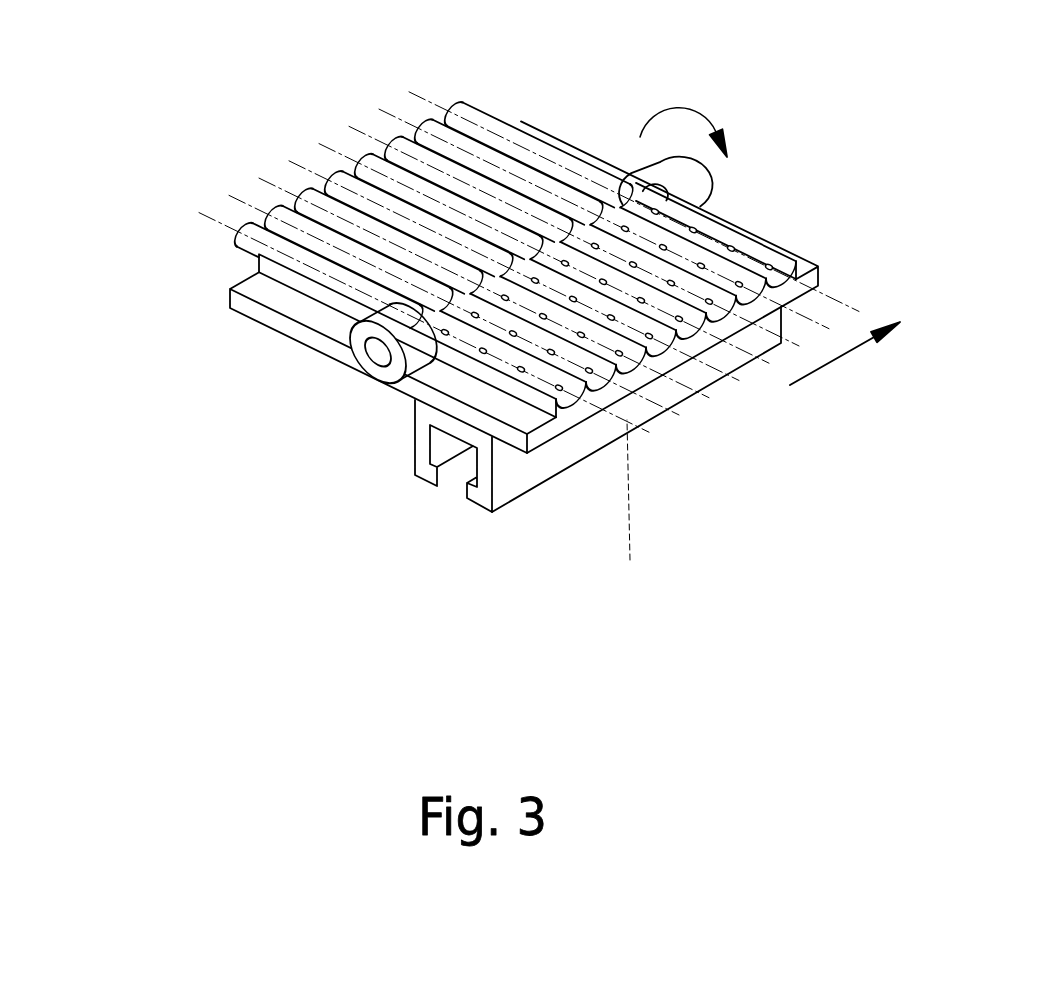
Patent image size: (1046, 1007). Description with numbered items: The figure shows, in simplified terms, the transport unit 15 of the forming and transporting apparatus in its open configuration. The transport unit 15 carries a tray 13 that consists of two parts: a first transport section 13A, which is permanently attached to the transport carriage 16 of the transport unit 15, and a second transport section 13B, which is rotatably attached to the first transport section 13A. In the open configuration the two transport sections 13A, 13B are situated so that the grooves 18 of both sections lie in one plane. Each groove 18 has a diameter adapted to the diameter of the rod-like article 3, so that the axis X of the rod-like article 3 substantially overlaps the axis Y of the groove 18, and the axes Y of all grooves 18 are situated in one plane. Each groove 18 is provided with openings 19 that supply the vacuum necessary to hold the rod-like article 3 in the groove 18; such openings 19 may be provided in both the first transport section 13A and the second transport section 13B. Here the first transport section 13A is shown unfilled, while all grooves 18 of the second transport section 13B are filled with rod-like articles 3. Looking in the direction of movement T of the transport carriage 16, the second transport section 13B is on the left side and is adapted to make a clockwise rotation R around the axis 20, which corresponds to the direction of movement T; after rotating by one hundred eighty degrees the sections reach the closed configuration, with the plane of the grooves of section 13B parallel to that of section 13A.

The rod-like article 3 is at (547, 140).
The tray 13 is at (434, 378).
The first transport section 13A is at (427, 400).
The second transport section 13B is at (240, 314).
The transport unit 15 is at (687, 422).
The transport carriage 16 is at (506, 466).
The groove 18 is at (706, 230).
The openings 19 is at (726, 252).
The axis 20 is at (362, 360).
The arrow R is at (690, 104).
The direction of movement T is at (842, 360).
The axis of the rod-like article X is at (220, 221).
The axis of the groove Y is at (670, 562).